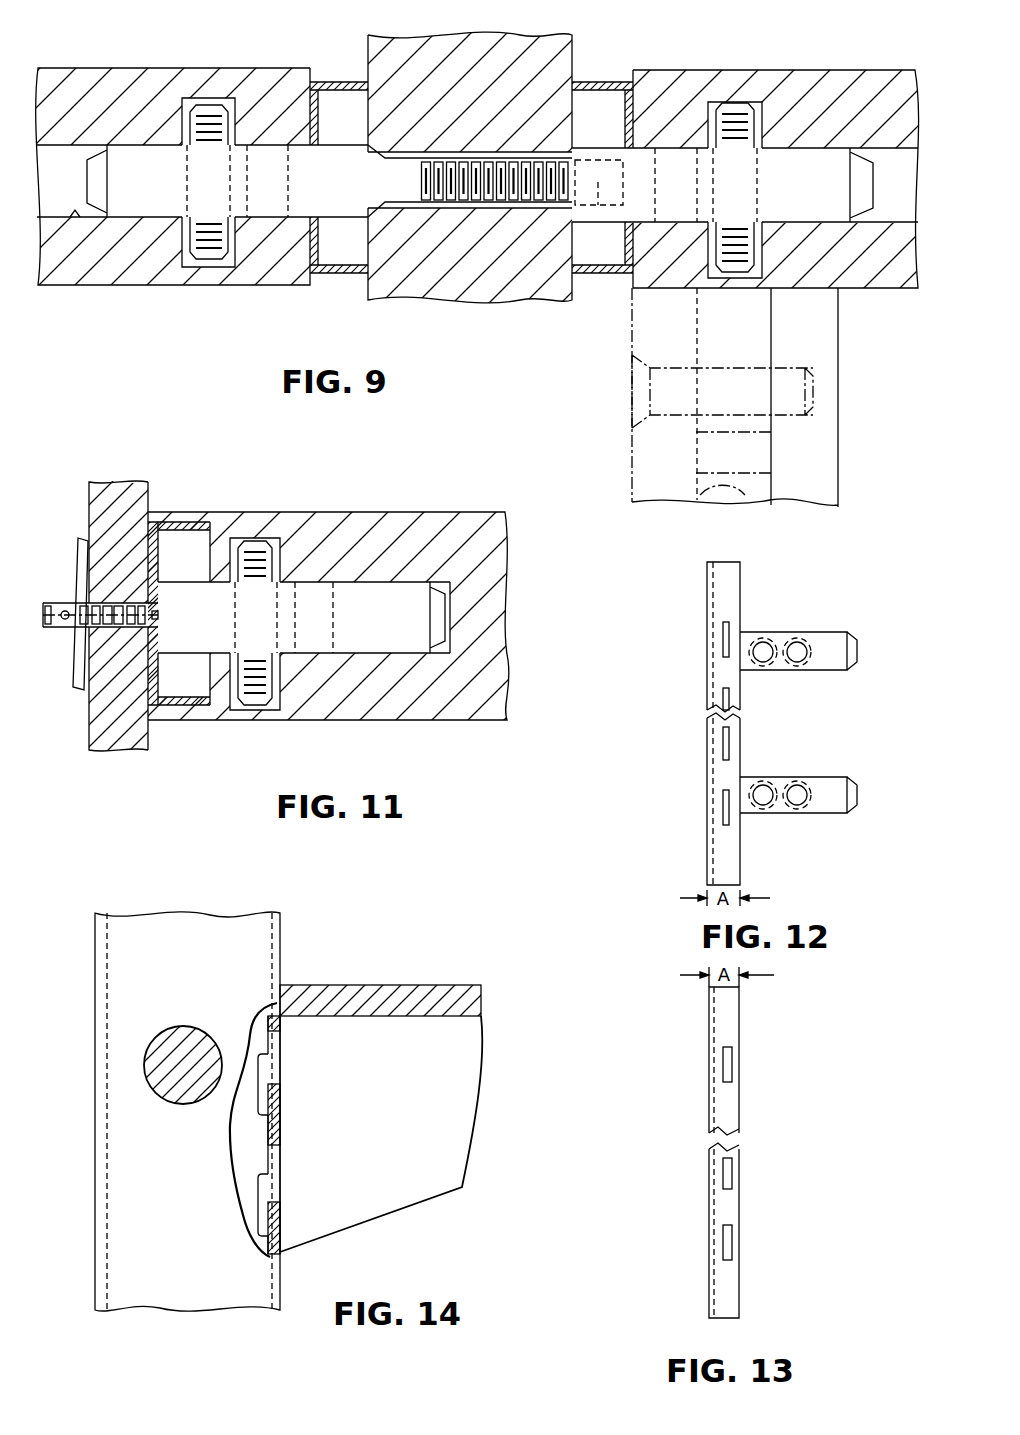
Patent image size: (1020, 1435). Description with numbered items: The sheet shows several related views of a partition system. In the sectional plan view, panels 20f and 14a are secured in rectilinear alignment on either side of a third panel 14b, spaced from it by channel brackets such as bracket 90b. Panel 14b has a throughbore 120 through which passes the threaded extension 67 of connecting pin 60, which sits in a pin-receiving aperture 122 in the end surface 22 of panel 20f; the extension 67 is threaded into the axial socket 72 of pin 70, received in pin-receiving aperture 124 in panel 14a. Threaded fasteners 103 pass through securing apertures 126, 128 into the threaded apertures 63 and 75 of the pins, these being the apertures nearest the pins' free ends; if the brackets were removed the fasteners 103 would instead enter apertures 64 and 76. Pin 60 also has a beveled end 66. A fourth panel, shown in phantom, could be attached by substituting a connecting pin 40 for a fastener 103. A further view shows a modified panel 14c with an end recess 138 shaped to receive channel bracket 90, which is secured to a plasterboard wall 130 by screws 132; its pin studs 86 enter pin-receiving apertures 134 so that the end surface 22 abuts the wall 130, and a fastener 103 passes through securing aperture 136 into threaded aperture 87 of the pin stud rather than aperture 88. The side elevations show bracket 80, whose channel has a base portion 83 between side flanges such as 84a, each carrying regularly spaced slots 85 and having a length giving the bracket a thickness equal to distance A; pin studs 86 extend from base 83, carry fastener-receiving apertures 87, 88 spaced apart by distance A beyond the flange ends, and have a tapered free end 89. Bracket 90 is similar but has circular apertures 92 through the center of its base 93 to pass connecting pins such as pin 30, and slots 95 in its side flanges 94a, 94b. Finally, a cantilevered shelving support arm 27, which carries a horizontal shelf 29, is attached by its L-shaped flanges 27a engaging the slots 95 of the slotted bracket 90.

In FIG. 9, the panel 20f is at (173, 159).
In FIG. 9, the panel 14a is at (793, 77).
In FIG. 9, the panel 14b is at (477, 57).
In FIG. 11, the partition panel 14c is at (365, 523).
In FIG. 9, the end edge 22 is at (313, 80).
In FIG. 9, the connecting pin 60 is at (326, 197).
In FIG. 9, the aperture 63 is at (187, 200).
In FIG. 9, the aperture 64 is at (290, 188).
In FIG. 9, the beveled end 66 is at (382, 168).
In FIG. 9, the threaded extension 67 is at (490, 188).
In FIG. 9, the pin 70 is at (643, 157).
In FIG. 9, the threaded socket 72 is at (599, 182).
In FIG. 9, the threaded aperture 75 is at (746, 179).
In FIG. 9, the threaded aperture 76 is at (660, 191).
In FIG. 9, the threaded fastener 103 is at (228, 100).
In FIG. 11, the threaded fastener 103 is at (251, 700).
In FIG. 9, the throughbore 120 is at (520, 157).
In FIG. 9, the pin-receiving aperture 122 is at (76, 215).
In FIG. 9, the pin-receiving aperture 124 is at (890, 222).
In FIG. 9, the securing aperture 126 is at (236, 249).
In FIG. 9, the securing aperture 128 is at (712, 265).
In FIG. 9, the channel 90b is at (617, 278).
In FIG. 9, the connecting pin 40 is at (772, 356).
In FIG. 11, the wall 130 is at (118, 481).
In FIG. 11, the screw 132 is at (56, 622).
In FIG. 11, the pin-receiving aperture 134 is at (447, 655).
In FIG. 11, the securing aperture 136 is at (280, 673).
In FIG. 11, the end recess 138 is at (197, 543).
In FIG. 11, the bracket 80 is at (155, 520).
In FIG. 12, the bracket 80 is at (703, 798).
In FIG. 11, the fastener-receiving aperture 87 is at (233, 626).
In FIG. 12, the fastener-receiving aperture 87 is at (763, 660).
In FIG. 11, the fastener-receiving aperture 88 is at (297, 607).
In FIG. 12, the fastener-receiving aperture 88 is at (797, 660).
In FIG. 12, the base portion 83 is at (707, 758).
In FIG. 12, the side flange 84a is at (730, 850).
In FIG. 12, the slot 85 is at (728, 632).
In FIG. 12, the connecting pin stud 86 is at (832, 785).
In FIG. 12, the beveled end 89 is at (856, 665).
In FIG. 13, the slotted channel bracket 90 is at (693, 1038).
In FIG. 14, the slotted channel bracket 90 is at (89, 1292).
In FIG. 13, the circular aperture 92 is at (710, 1220).
In FIG. 14, the circular aperture 92 is at (170, 1025).
In FIG. 13, the base 93 is at (712, 1296).
In FIG. 14, the base 93 is at (194, 1283).
In FIG. 13, the flange 94a is at (728, 1026).
In FIG. 14, the flange 94a is at (283, 1125).
In FIG. 14, the flange 94b is at (107, 940).
In FIG. 13, the slot 95 is at (731, 1068).
In FIG. 14, the slot 95 is at (281, 1030).
In FIG. 14, the shelving support arm 27 is at (375, 1130).
In FIG. 14, the L-shaped flange 27a is at (264, 1176).
In FIG. 14, the shelf 29 is at (390, 985).
In FIG. 14, the connecting pin 30 is at (185, 1090).